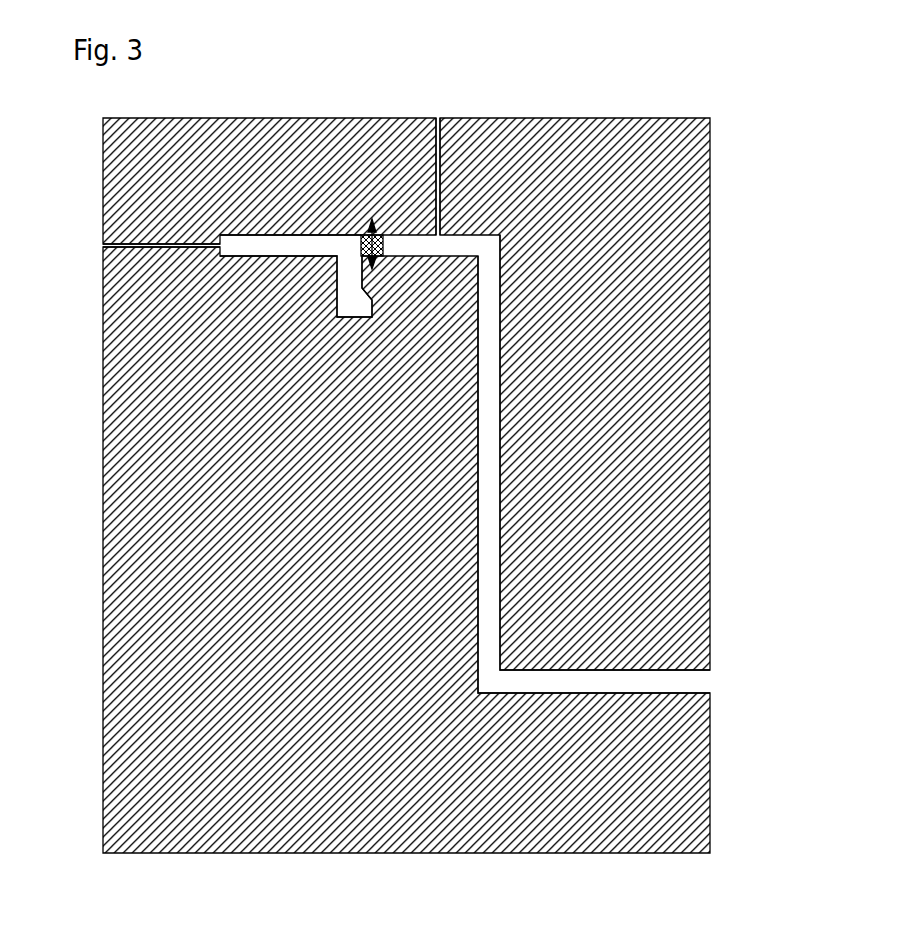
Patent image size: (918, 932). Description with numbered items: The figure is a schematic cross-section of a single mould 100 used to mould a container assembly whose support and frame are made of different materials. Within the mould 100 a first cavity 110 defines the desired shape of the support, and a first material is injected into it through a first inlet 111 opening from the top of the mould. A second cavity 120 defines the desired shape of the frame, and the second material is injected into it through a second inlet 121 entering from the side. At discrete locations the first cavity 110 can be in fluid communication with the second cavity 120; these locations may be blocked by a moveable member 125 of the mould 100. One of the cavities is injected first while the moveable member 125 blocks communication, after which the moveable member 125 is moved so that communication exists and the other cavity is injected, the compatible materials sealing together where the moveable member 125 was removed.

The mould 100 is at (638, 130).
The first cavity 110 is at (537, 682).
The first inlet 111 is at (441, 162).
The second cavity 120 is at (270, 247).
The second inlet 121 is at (128, 240).
The moveable member 125 is at (363, 232).